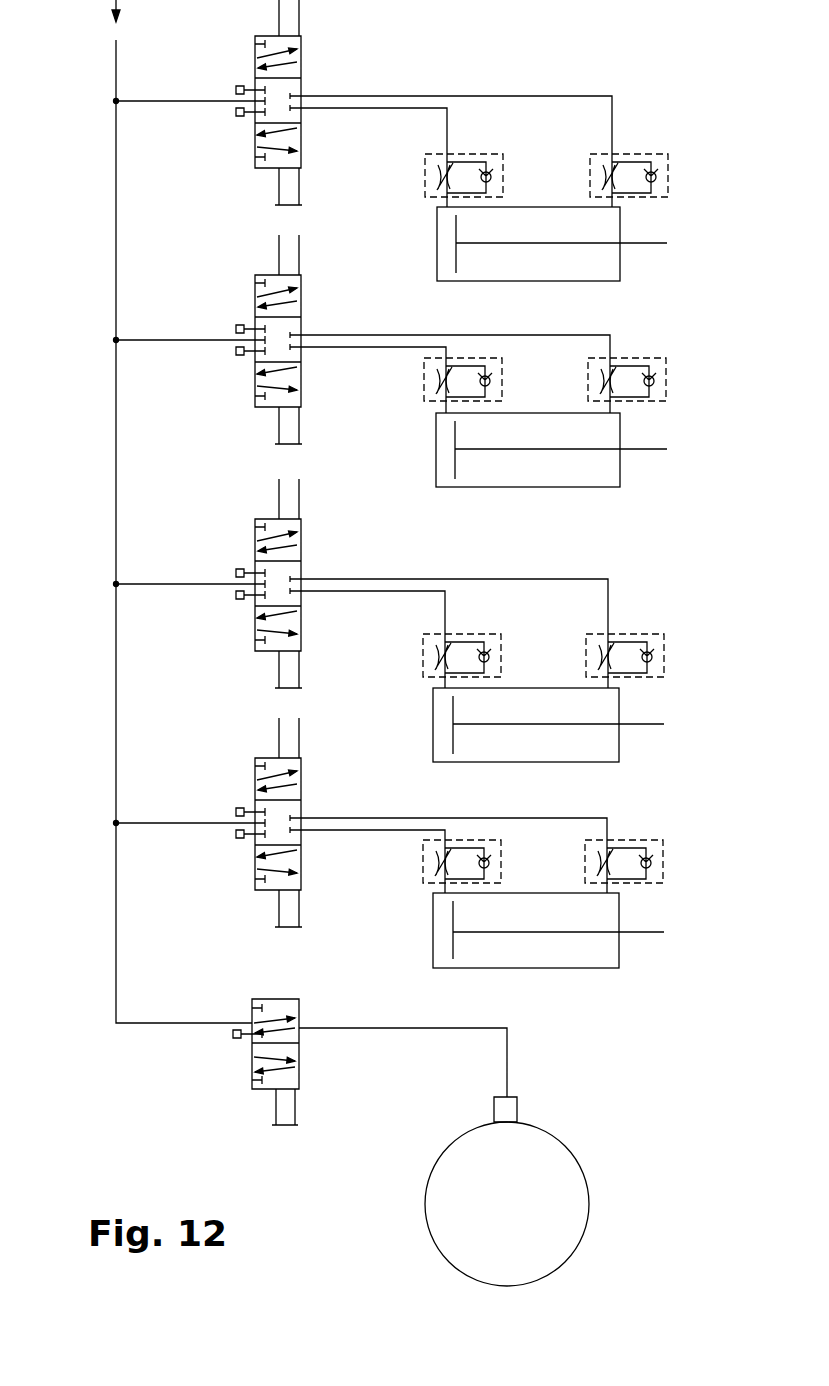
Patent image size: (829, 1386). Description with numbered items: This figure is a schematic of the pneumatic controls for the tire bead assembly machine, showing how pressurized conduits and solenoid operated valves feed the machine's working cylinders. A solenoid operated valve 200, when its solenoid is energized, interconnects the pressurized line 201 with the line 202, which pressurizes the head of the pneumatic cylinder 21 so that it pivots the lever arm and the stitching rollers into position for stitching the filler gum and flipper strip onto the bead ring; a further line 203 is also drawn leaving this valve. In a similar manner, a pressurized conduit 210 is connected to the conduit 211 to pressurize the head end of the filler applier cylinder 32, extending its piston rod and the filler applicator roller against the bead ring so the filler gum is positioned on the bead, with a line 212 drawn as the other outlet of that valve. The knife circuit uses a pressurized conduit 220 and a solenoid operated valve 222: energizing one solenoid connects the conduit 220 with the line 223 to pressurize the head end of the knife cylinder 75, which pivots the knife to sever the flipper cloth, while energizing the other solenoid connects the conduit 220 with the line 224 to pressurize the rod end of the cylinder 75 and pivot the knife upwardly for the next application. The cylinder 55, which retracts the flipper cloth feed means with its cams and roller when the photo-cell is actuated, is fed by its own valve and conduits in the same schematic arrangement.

The cylinder 55 is at (623, 224).
The pneumatic cylinder 75 is at (622, 430).
The pneumatic cylinder 21 is at (621, 703).
The filler applier cylinder 32 is at (622, 913).
The pressurized conduit 220 is at (166, 340).
The solenoid operated valve 222 is at (303, 310).
The line 223 is at (393, 336).
The line 224 is at (393, 347).
The pressurized line 201 is at (162, 584).
The solenoid operated valve 200 is at (252, 617).
The line 203 is at (400, 579).
The line 202 is at (341, 591).
The pressurized conduit 210 is at (162, 823).
The line 212 is at (400, 817).
The conduit 211 is at (328, 829).